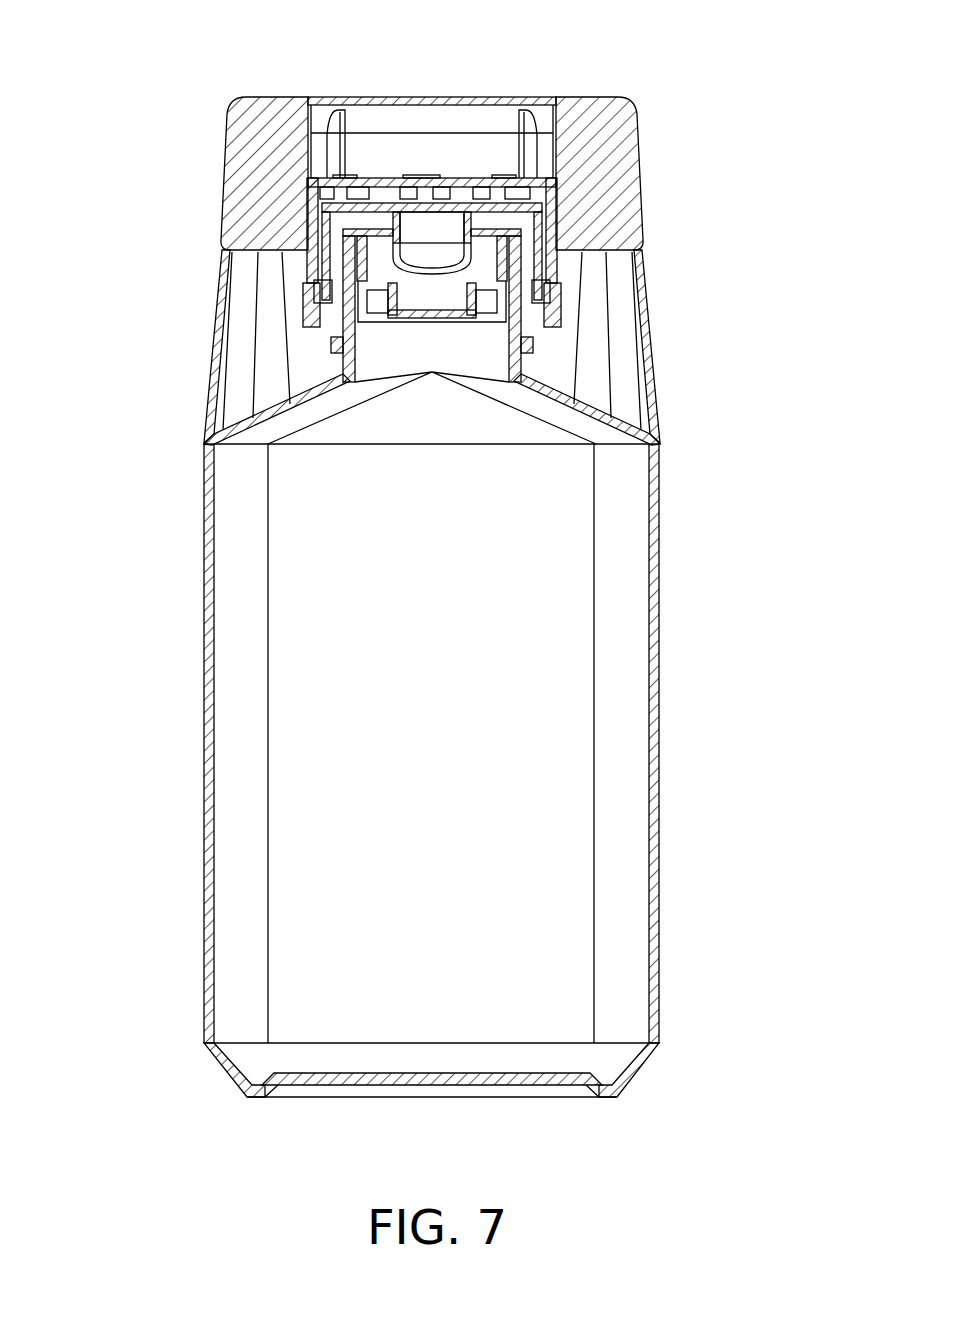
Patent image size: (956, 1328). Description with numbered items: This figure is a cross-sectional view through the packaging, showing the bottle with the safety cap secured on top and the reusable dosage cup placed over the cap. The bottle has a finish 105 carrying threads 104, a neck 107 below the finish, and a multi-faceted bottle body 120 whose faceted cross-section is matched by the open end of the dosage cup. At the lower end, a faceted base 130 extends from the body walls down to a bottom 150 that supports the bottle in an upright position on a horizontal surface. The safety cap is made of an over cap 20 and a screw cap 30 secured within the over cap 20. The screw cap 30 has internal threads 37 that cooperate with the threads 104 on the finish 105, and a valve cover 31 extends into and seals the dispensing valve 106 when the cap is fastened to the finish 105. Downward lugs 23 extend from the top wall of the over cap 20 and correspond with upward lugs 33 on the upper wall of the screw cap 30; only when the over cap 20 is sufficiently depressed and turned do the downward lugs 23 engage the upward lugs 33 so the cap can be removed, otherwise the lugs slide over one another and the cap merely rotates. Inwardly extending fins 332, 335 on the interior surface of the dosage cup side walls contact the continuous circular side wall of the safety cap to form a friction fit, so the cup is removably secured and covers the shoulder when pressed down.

The fin 332 is at (268, 113).
The upward lug 33 is at (443, 190).
The downward lug 23 is at (492, 195).
The fin 335 is at (593, 137).
The valve cover 31 is at (358, 224).
The dispensing valve 106 is at (560, 195).
The over cap 20 is at (310, 217).
The internal threads 37 is at (558, 240).
The screw cap 30 is at (305, 273).
The threads 104 is at (515, 272).
The finish 105 is at (515, 318).
The neck 107 is at (520, 378).
The multi-faceted bottle body 120 is at (660, 703).
The base 130 is at (637, 1067).
The bottom 150 is at (608, 1098).